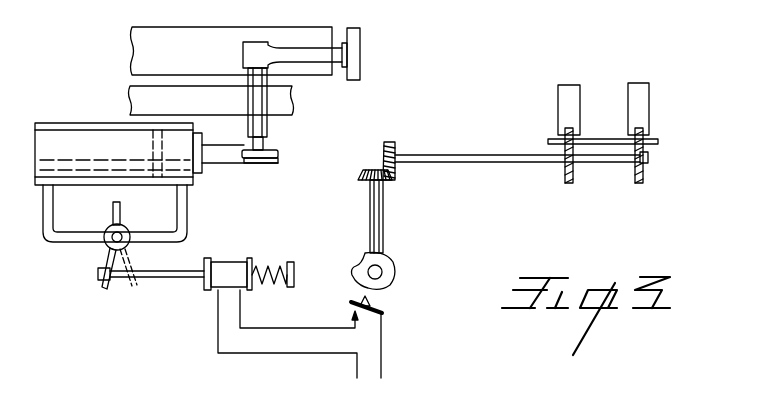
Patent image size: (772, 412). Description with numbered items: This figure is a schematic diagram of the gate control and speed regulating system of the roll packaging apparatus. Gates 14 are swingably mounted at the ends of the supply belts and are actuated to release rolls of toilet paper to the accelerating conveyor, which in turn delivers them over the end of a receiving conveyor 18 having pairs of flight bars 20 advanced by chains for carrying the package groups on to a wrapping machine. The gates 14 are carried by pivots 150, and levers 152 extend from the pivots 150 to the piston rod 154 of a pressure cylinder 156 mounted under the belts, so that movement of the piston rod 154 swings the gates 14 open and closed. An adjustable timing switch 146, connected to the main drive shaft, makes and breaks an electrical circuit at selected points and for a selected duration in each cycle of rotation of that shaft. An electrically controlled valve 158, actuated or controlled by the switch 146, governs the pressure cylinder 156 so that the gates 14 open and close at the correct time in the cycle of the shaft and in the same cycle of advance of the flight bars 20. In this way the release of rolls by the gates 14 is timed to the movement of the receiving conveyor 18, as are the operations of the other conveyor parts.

The gates 14 is at (353, 58).
The pivots 150 is at (263, 132).
The levers 152 is at (278, 152).
The piston rod 154 is at (257, 163).
The pressure cylinder 156 is at (195, 183).
The electrically controlled valve 158 is at (107, 250).
The adjustable timing switch 146 is at (382, 310).
The receiving conveyor 18 is at (658, 141).
The flight bars 20 is at (640, 107).